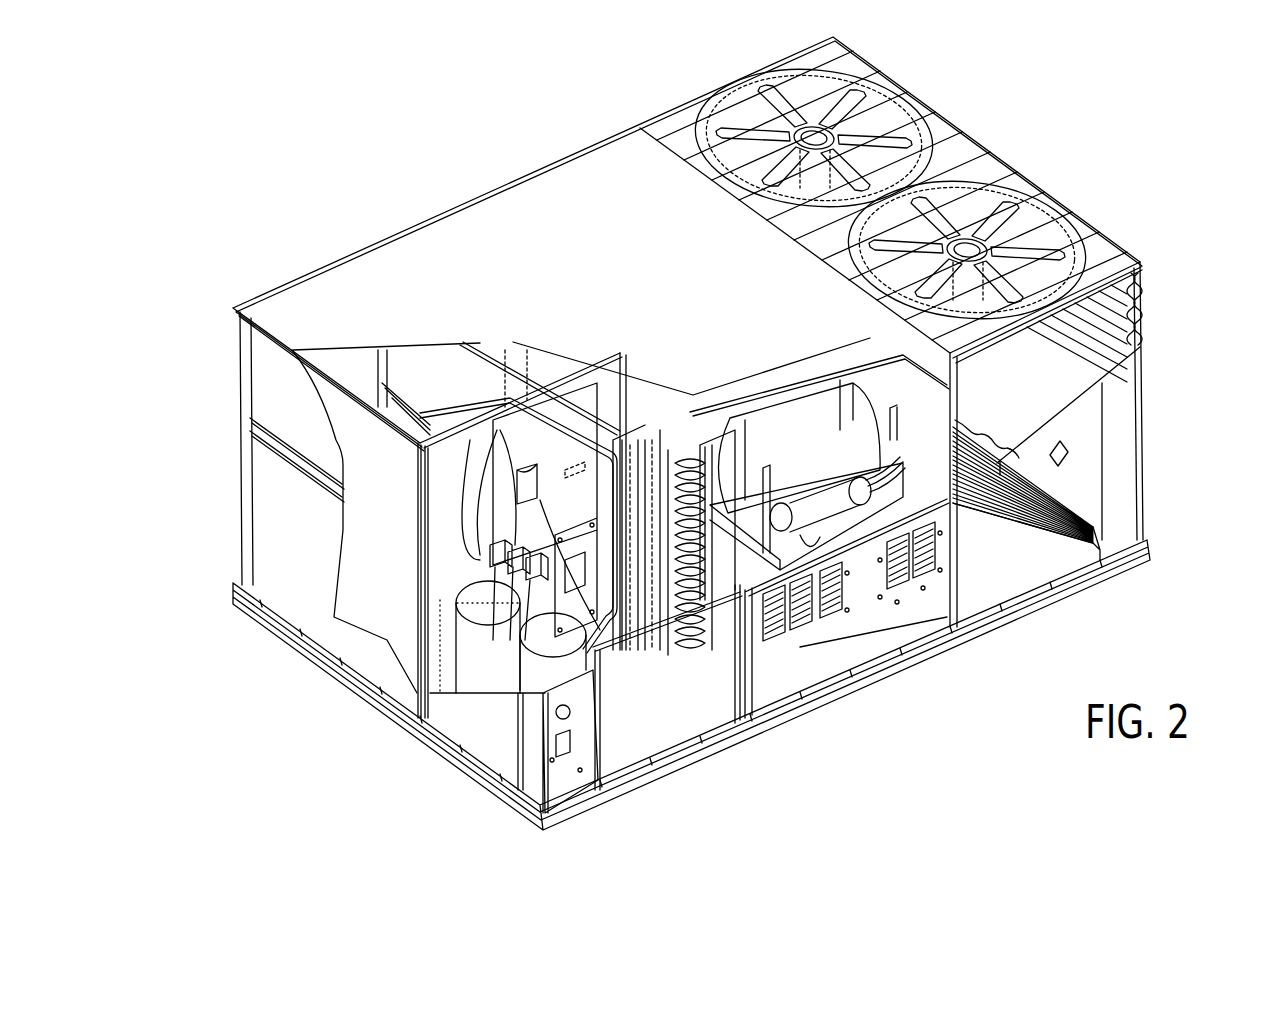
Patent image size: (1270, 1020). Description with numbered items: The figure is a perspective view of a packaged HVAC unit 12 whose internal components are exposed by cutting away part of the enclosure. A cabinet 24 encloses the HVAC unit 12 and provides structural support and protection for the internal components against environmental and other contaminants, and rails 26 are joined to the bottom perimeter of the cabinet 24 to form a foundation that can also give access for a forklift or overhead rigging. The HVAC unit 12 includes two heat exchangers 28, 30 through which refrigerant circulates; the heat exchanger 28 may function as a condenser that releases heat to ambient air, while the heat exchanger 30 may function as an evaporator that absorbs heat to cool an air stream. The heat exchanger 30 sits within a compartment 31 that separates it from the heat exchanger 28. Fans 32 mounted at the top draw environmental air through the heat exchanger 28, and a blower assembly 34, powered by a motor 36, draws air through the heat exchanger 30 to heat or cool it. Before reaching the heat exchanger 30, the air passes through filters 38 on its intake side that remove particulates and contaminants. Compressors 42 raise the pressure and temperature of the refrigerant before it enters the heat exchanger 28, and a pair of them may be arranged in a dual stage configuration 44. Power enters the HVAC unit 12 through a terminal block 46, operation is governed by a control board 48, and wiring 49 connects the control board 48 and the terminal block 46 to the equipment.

The HVAC unit 12 is at (418, 134).
The cabinet 24 is at (277, 557).
The rails 26 is at (303, 647).
The heat exchanger 28 is at (1142, 318).
The heat exchanger 30 is at (703, 647).
The compartment 31 is at (707, 487).
The fans 32 is at (975, 205).
The blower assembly 34 is at (883, 447).
The motor 36 is at (817, 497).
The filters 38 is at (652, 477).
The compressors 42 is at (462, 637).
The dual stage configuration 44 is at (457, 590).
The terminal block 46 is at (495, 530).
The control board 48 is at (583, 543).
The wiring 49 is at (660, 475).